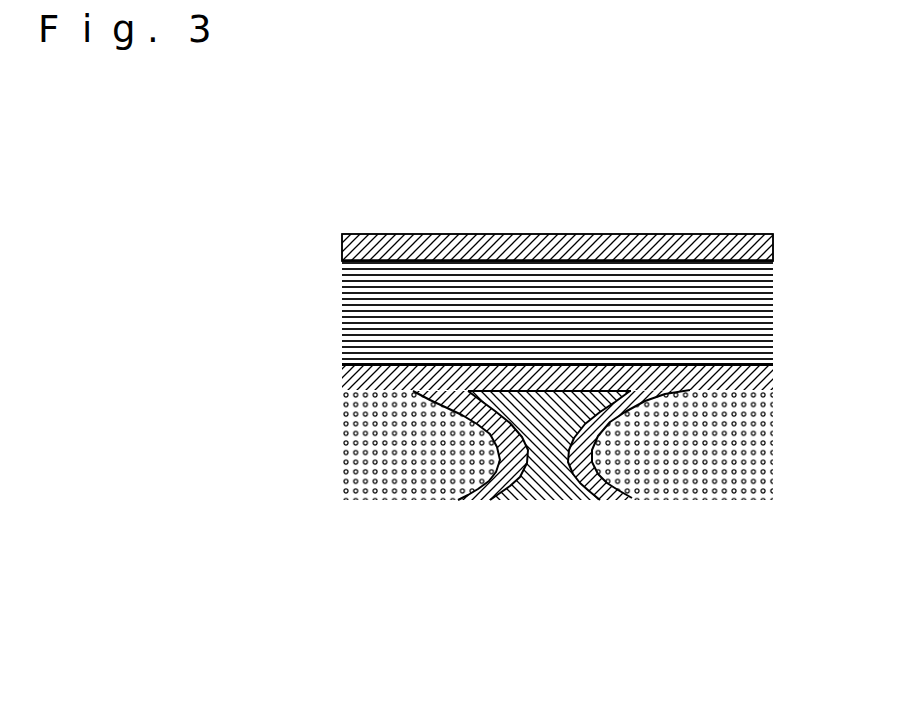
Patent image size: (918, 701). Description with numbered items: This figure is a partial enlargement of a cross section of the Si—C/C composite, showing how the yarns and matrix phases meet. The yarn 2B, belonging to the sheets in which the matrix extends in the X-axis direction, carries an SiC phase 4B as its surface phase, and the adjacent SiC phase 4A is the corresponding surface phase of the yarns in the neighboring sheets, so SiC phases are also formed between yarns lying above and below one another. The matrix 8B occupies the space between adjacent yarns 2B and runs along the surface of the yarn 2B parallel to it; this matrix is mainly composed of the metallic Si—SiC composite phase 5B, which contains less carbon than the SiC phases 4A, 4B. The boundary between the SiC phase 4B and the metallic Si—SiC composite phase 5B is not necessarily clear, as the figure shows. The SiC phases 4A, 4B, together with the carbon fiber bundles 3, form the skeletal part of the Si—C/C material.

The SiC phase 4A is at (363, 250).
The matrix 8B is at (494, 358).
The yarn 2B is at (340, 443).
The SiC phase 4B is at (504, 482).
The metallic Si—SiC composite phase 5B is at (547, 468).
The carbon fiber bundle 3 is at (713, 478).